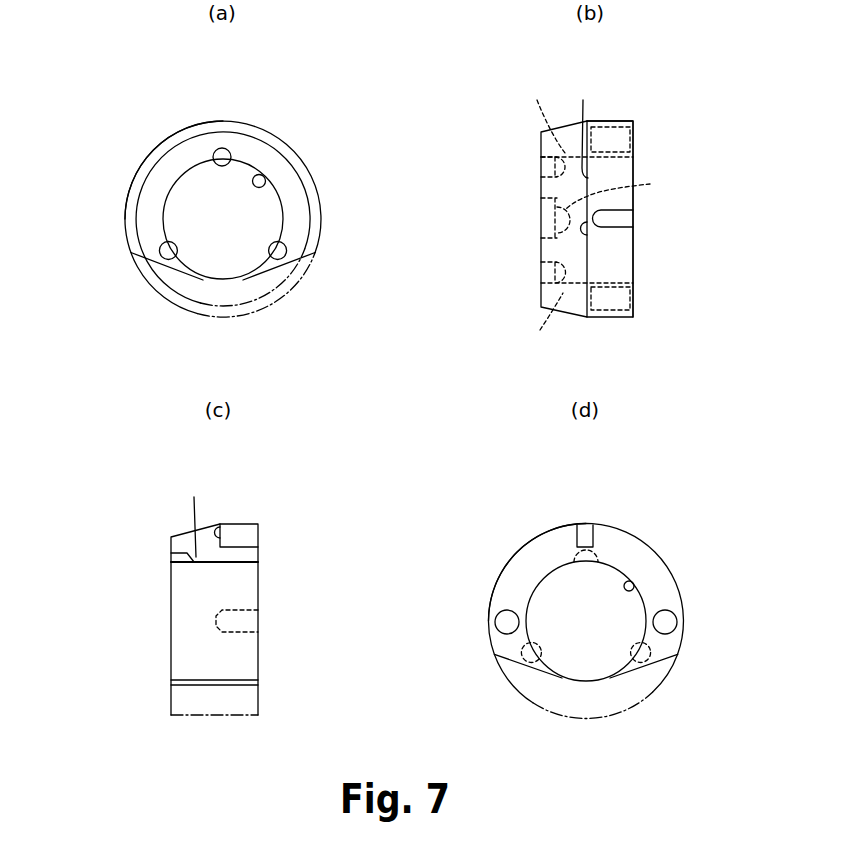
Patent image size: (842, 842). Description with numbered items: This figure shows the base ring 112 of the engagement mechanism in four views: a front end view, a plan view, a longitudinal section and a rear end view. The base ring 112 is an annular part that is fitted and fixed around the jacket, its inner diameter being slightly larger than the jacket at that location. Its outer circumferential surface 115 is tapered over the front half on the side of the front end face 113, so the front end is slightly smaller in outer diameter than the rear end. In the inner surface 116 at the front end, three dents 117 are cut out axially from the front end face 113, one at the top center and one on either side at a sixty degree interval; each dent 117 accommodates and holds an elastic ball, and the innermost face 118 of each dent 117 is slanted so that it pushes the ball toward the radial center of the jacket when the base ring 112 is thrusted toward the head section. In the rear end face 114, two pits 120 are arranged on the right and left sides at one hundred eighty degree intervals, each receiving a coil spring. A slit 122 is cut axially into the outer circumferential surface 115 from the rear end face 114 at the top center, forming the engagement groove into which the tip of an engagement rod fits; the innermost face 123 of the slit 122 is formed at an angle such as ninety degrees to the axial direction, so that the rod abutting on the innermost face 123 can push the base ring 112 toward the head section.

The base ring 112 is at (265, 112).
The front end face 113 is at (240, 147).
The rear end face 114 is at (633, 160).
The circumferential surface 115 is at (127, 190).
The inner surface 116 is at (268, 184).
The dent 117 is at (218, 152).
The innermost face 118 is at (428, 315).
The pit 120 is at (633, 137).
The slit 122 is at (610, 214).
The innermost face 123 is at (587, 237).